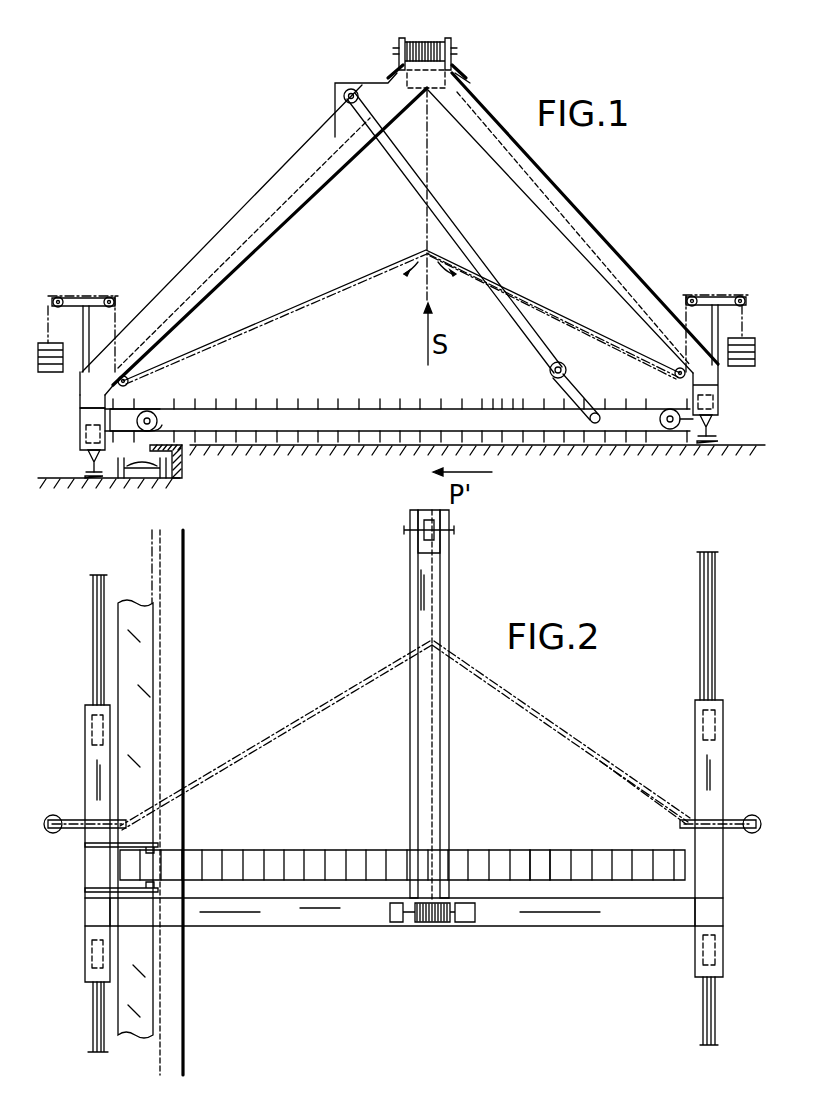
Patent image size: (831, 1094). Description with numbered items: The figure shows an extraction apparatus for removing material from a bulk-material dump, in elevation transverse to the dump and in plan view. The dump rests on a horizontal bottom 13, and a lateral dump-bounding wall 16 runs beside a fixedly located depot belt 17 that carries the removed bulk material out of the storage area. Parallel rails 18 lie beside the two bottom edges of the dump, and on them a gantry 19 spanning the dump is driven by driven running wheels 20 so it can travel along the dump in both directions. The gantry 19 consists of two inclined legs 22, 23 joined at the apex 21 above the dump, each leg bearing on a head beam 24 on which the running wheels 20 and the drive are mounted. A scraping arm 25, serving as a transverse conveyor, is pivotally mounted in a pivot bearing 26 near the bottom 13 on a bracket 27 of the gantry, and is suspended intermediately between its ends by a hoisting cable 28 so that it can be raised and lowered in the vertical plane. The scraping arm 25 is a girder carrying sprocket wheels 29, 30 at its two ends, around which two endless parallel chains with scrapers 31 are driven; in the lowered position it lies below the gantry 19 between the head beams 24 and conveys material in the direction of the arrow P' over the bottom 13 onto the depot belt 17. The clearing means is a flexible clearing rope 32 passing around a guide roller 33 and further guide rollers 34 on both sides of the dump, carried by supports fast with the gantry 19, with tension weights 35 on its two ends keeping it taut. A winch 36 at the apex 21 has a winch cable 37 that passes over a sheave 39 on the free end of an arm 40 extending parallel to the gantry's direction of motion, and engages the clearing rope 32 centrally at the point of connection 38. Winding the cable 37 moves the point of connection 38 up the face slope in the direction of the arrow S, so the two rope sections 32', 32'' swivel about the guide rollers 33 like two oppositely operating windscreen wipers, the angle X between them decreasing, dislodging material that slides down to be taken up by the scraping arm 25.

In FIG. 1, the bottom of the dump 13 is at (343, 447).
In FIG. 1, the lateral dump-bounding wall 16 is at (182, 478).
In FIG. 1, the depot belt 17 is at (150, 478).
In FIG. 2, the depot belt 17 is at (138, 608).
In FIG. 1, the rails 18 is at (93, 481).
In FIG. 2, the rails 18 is at (90, 594).
In FIG. 1, the gantry 19 is at (279, 184).
In FIG. 2, the gantry 19 is at (342, 930).
In FIG. 1, the running wheels 20 is at (88, 457).
In FIG. 2, the running wheels 20 is at (88, 737).
In FIG. 1, the apex of the gantry 21 is at (462, 78).
In FIG. 1, the inclined leg 22 is at (222, 248).
In FIG. 2, the inclined leg 22 is at (273, 924).
In FIG. 1, the inclined leg 23 is at (571, 208).
In FIG. 2, the inclined leg 23 is at (590, 918).
In FIG. 1, the head beam 24 is at (80, 426).
In FIG. 2, the head beam 24 is at (98, 770).
In FIG. 1, the scraping arm 25 is at (398, 422).
In FIG. 2, the scraping arm 25 is at (303, 854).
In FIG. 1, the pivot bearing 26 is at (156, 418).
In FIG. 2, the pivot bearing 26 is at (160, 848).
In FIG. 1, the bracket 27 is at (100, 407).
In FIG. 2, the bracket 27 is at (108, 892).
In FIG. 1, the hoisting cable 28 is at (392, 166).
In FIG. 1, the sprocket wheel 29 is at (160, 433).
In FIG. 1, the sprocket wheel 30 is at (672, 430).
In FIG. 1, the scrapers 31 is at (508, 408).
In FIG. 2, the scrapers 31 is at (550, 853).
In FIG. 1, the clearing rope 32 is at (553, 313).
In FIG. 2, the clearing rope 32 is at (637, 753).
In FIG. 1, the section of the clearing rope 32' is at (277, 316).
In FIG. 2, the section of the clearing rope 32' is at (276, 735).
In FIG. 1, the section of the clearing rope 32'' is at (553, 315).
In FIG. 2, the section of the clearing rope 32'' is at (561, 731).
In FIG. 1, the guide roller 33 is at (128, 380).
In FIG. 1, the guide rollers 34 is at (108, 300).
In FIG. 2, the guide rollers 34 is at (118, 820).
In FIG. 1, the tension weights 35 is at (48, 342).
In FIG. 2, the tension weights 35 is at (53, 834).
In FIG. 1, the winch 36 is at (436, 40).
In FIG. 2, the winch 36 is at (440, 928).
In FIG. 1, the winch cable 37 is at (430, 162).
In FIG. 2, the winch cable 37 is at (437, 746).
In FIG. 1, the point of connection 38 is at (420, 250).
In FIG. 2, the sheave 39 is at (432, 510).
In FIG. 1, the arm 40 is at (395, 78).
In FIG. 2, the arm 40 is at (440, 589).